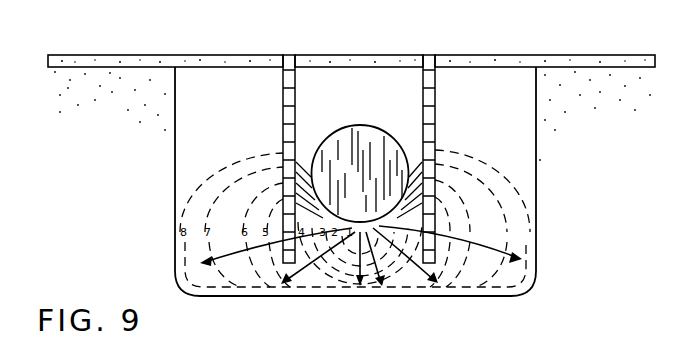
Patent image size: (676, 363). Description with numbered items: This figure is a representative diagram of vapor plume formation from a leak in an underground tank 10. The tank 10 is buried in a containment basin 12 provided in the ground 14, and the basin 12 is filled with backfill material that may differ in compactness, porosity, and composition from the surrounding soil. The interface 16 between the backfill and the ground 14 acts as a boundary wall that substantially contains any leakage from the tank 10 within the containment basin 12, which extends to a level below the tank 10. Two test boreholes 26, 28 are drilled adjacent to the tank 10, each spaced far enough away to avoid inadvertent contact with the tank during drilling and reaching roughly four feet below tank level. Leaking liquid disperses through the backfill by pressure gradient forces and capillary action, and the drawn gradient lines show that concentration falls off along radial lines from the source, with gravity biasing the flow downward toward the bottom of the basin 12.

The underground tank 10 is at (382, 146).
The containment basin 12 is at (347, 109).
The ground 14 is at (118, 109).
The interface 16 is at (537, 170).
The test borehole 26 is at (428, 68).
The test borehole 28 is at (288, 88).